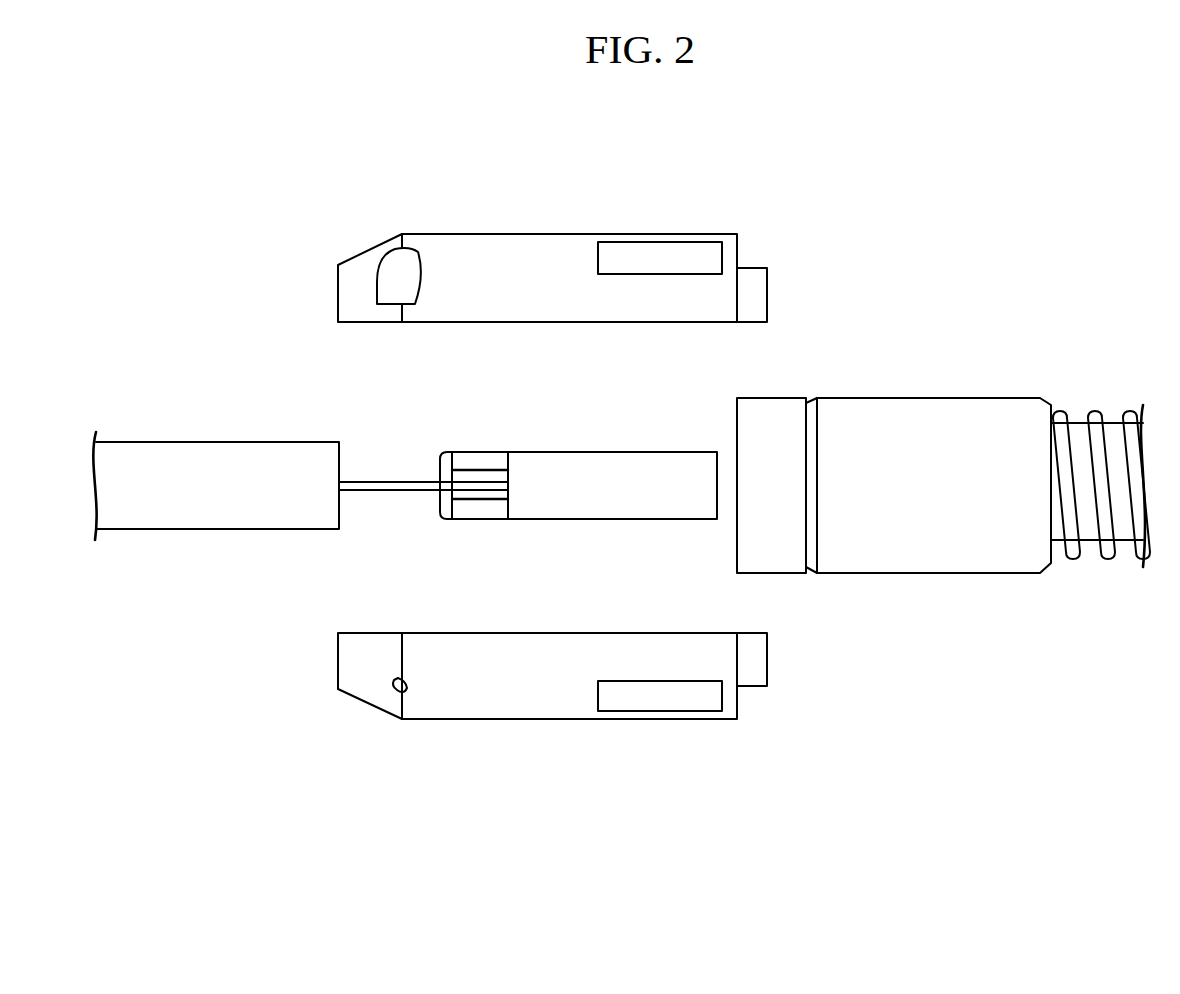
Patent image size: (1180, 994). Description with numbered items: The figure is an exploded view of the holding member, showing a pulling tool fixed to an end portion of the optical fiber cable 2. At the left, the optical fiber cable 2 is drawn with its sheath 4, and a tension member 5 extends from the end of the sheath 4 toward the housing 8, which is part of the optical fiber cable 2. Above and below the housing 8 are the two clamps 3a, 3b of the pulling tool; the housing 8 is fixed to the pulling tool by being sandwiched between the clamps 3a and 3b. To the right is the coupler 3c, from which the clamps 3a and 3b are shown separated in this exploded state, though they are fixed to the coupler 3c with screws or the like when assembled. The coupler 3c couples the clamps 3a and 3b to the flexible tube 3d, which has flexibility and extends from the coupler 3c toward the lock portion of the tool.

The optical fiber cable 2 is at (158, 428).
The clamp 3a is at (484, 258).
The clamp 3b is at (516, 701).
The coupler 3c is at (908, 560).
The flexible tube 3d is at (1077, 432).
The sheath 4 is at (162, 507).
The tension member 5 is at (392, 486).
The housing 8 is at (574, 455).